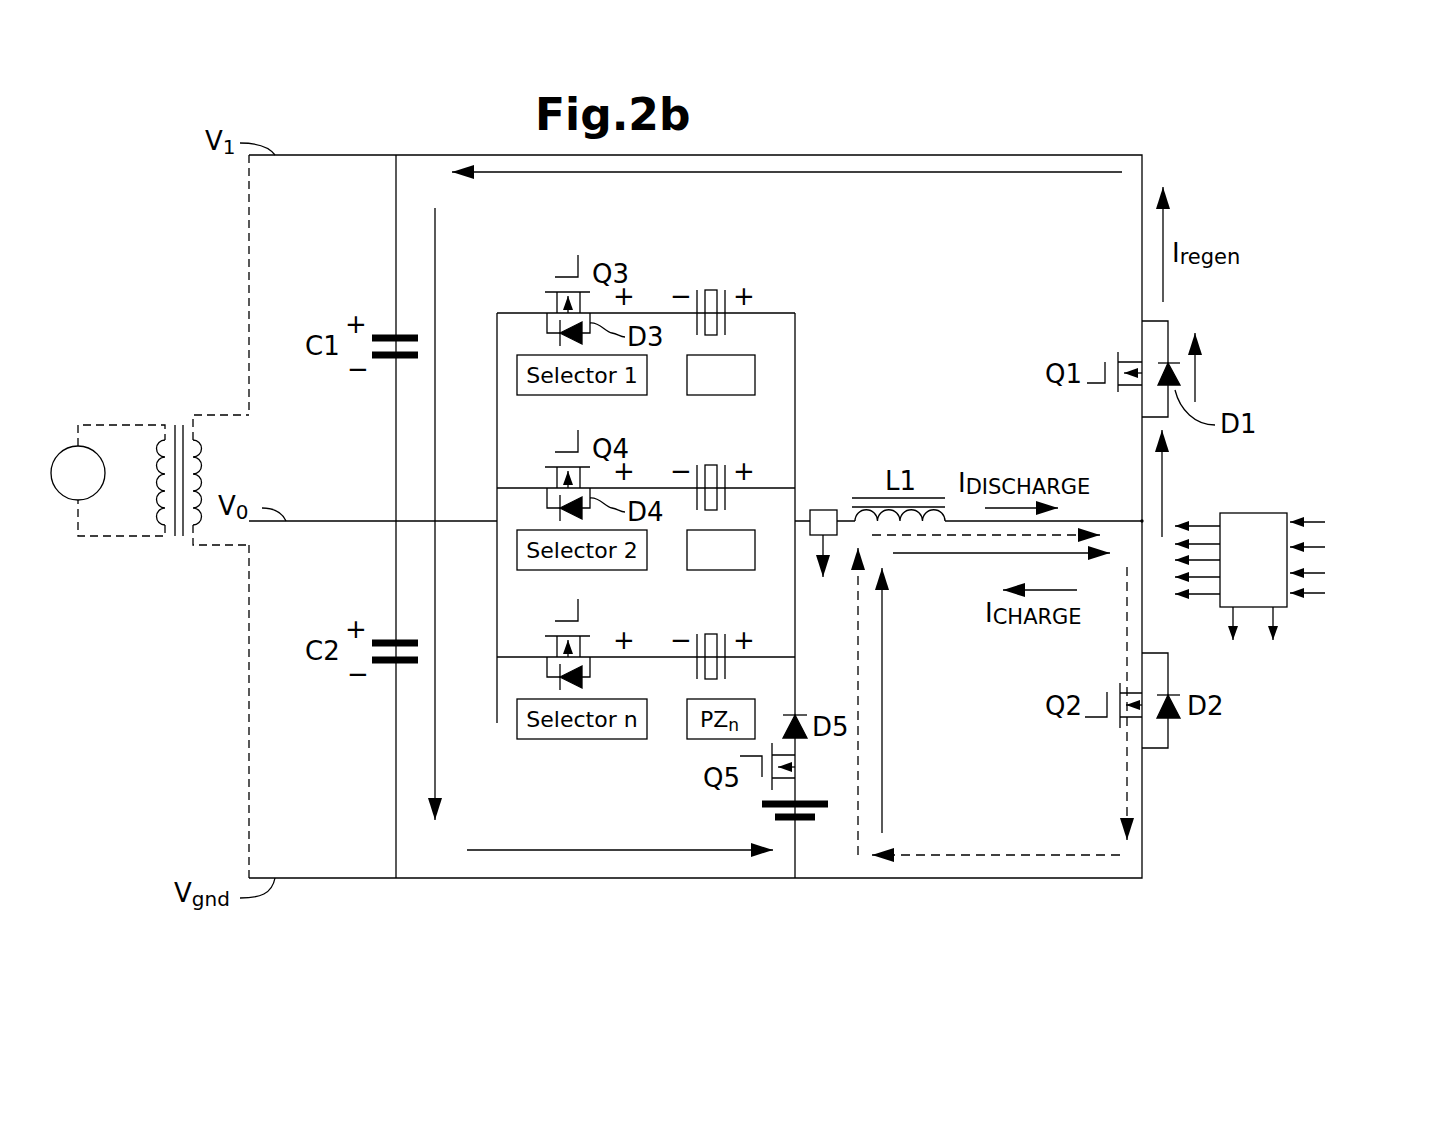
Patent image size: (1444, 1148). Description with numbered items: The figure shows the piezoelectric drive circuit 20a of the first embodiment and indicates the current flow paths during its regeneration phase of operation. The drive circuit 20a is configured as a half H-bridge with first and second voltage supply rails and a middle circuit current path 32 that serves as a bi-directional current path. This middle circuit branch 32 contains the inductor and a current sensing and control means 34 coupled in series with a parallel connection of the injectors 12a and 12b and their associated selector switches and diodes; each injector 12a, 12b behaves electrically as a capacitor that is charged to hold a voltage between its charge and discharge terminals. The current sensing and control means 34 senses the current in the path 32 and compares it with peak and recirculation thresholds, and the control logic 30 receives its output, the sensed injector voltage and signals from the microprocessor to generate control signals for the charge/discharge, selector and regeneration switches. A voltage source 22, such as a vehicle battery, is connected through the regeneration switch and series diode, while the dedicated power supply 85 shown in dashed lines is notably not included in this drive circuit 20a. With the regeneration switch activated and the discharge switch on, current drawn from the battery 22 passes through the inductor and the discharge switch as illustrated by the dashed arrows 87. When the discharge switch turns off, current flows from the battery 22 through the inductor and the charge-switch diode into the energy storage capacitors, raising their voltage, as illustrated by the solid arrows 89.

The dedicated power supply 85 is at (249, 258).
The solid arrows 89 is at (915, 172).
The dashed arrows 87 is at (907, 535).
The injector 12a is at (712, 395).
The injector 12b is at (712, 570).
The current sensing and control means 34 is at (823, 510).
The control logic 30 is at (1107, 552).
The middle circuit current path 32 is at (1127, 518).
The voltage source 22 is at (805, 825).
The piezoelectric drive circuit 20a is at (1275, 285).